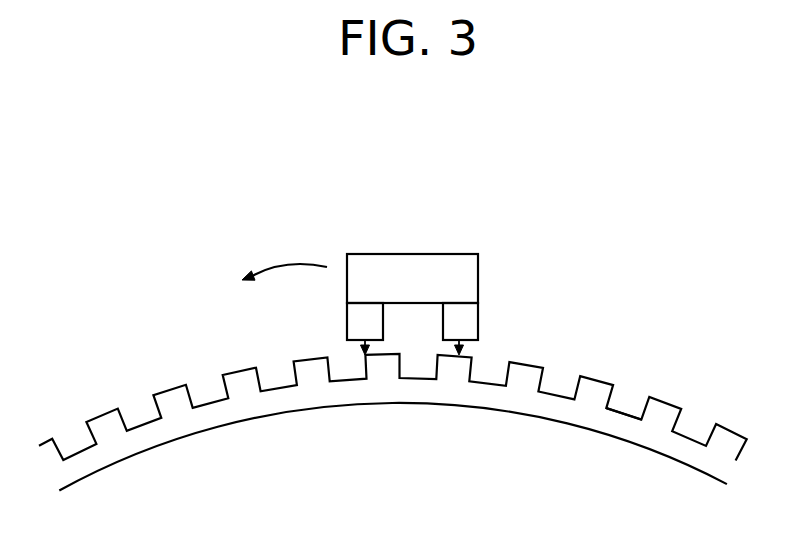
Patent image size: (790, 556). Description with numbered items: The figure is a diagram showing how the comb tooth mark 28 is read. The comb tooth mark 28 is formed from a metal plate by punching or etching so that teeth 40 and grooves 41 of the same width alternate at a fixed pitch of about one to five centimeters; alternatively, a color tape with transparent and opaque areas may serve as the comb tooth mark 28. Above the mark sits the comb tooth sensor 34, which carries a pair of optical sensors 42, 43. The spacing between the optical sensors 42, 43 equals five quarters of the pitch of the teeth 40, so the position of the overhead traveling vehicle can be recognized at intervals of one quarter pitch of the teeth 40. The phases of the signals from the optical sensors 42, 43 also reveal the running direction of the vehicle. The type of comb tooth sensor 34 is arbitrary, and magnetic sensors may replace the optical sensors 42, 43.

The comb tooth mark 28 is at (612, 437).
The comb tooth sensor 34 is at (422, 270).
The teeth 40 is at (663, 417).
The grooves 41 is at (628, 410).
The optical sensor 42 is at (365, 323).
The optical sensor 43 is at (470, 327).